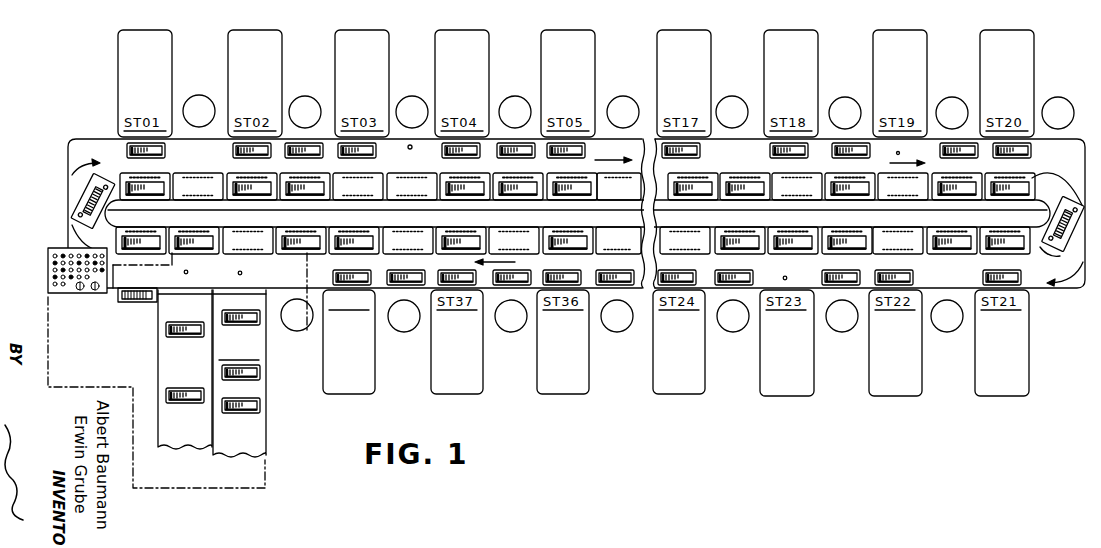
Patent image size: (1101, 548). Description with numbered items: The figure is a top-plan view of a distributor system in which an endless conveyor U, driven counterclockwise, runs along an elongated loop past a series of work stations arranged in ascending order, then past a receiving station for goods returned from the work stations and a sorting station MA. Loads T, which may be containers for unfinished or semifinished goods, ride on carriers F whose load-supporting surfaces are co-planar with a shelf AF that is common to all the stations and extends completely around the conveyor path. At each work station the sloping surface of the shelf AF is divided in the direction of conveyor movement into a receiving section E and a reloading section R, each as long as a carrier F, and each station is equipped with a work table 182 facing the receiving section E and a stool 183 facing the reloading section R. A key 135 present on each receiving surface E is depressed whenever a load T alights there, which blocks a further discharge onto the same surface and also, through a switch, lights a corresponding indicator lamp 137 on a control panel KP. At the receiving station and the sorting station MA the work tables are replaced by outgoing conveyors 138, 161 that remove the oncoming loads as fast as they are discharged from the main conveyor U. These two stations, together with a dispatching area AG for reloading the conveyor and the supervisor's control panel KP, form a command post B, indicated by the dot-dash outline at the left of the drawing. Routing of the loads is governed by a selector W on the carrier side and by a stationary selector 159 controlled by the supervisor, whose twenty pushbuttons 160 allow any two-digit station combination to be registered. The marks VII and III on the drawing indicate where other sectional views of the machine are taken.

The key 135 is at (409, 149).
The indicator lamp 137 is at (48, 264).
The outgoing conveyor 138 is at (259, 358).
The stationary selector 159 is at (114, 316).
The pushbuttons 160 is at (137, 302).
The outgoing conveyor 161 is at (167, 369).
The work table 182 is at (369, 365).
The stool 183 is at (405, 329).
The conveyor U is at (577, 216).
The shelf AF is at (193, 148).
The carrier F is at (1058, 200).
The selector W is at (1073, 232).
The load T is at (407, 283).
The reloading section R is at (263, 280).
The receiving section E is at (918, 280).
The control panel KP is at (64, 305).
The dispatching area AG is at (114, 288).
The sorting station MA is at (185, 361).
The command post B is at (168, 473).
The section line VII is at (113, 333).
The section line III is at (303, 330).